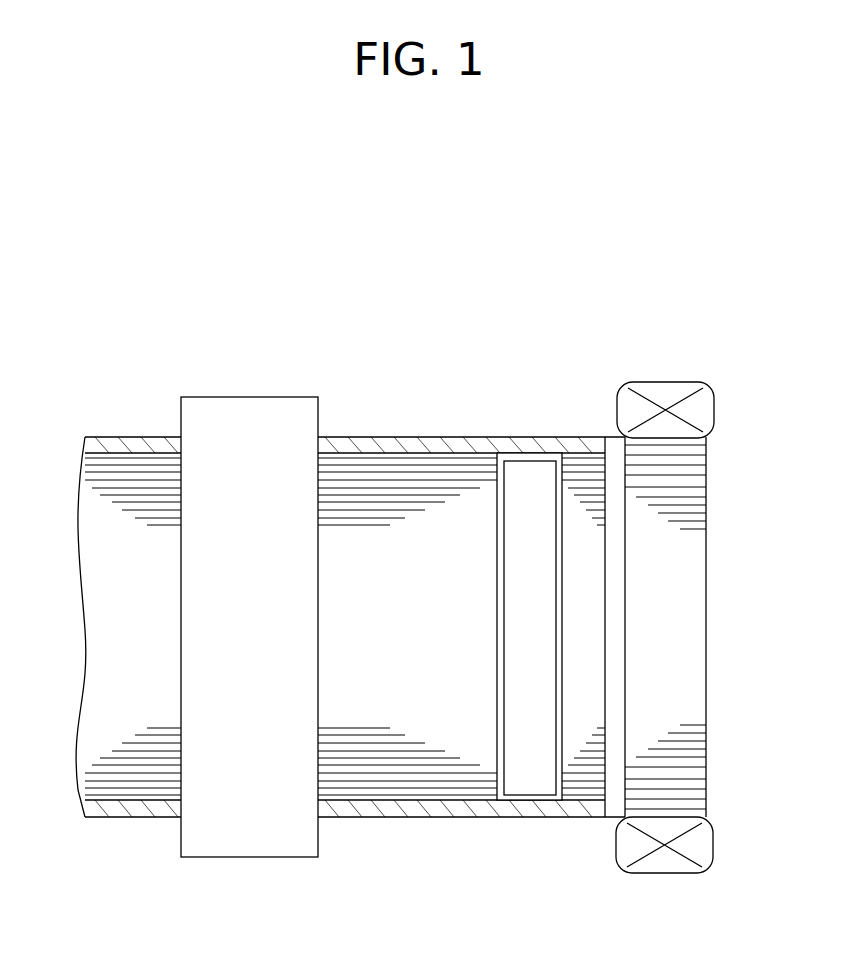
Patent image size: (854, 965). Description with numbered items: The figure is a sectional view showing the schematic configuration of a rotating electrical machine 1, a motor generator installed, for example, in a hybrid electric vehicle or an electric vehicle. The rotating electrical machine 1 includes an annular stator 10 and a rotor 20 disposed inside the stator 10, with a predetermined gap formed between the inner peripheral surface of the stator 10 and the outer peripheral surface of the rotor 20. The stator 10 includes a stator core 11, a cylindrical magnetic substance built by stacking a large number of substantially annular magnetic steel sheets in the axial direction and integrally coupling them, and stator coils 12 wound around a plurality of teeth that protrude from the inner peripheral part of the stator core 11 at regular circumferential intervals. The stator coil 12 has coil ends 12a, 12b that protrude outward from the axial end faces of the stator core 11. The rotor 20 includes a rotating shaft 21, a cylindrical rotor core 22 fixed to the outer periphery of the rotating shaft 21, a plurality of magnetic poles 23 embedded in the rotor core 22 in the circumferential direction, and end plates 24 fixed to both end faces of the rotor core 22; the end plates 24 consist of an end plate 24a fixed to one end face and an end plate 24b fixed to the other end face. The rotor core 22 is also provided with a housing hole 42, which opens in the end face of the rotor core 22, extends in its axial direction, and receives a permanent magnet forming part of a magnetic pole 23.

The rotating electrical machine 1 is at (478, 270).
The stator 10 is at (672, 332).
The stator core 11 is at (690, 613).
The stator coil 12 is at (716, 387).
The coil end 12a is at (660, 395).
The coil end 12b is at (660, 868).
The rotor 20 is at (398, 365).
The rotating shaft 21 is at (242, 418).
The rotor core 22 is at (388, 628).
The magnetic pole 23 is at (540, 462).
The end plates 24 is at (483, 388).
The end plate 24a is at (425, 440).
The end plate 24b is at (420, 810).
The housing hole 42 is at (525, 803).